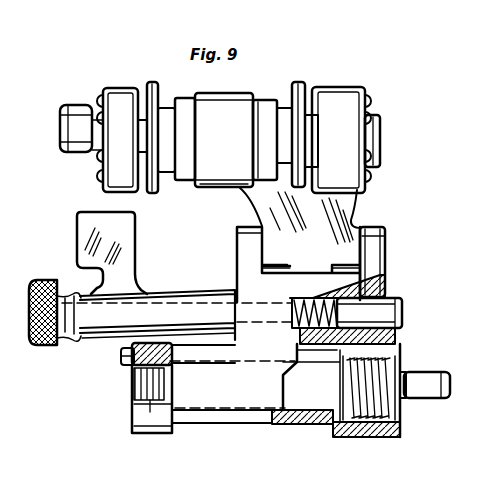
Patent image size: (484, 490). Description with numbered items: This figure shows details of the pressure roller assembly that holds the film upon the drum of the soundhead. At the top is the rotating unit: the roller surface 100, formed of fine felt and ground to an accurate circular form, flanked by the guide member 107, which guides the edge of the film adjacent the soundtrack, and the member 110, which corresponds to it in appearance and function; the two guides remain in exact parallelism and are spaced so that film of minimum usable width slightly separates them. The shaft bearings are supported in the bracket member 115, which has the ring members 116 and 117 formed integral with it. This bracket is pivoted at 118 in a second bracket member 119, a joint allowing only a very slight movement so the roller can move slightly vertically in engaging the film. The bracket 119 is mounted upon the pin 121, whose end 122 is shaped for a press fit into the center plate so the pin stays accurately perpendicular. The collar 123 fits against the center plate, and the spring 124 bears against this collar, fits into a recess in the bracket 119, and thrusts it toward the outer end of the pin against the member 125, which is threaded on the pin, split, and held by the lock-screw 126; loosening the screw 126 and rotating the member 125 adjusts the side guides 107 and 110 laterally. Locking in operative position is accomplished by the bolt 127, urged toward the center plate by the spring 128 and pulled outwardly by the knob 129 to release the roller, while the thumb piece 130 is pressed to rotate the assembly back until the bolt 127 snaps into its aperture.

The roller surface 100 is at (250, 93).
The guide member 107 is at (172, 78).
The member 110 is at (300, 83).
The bracket member 115 is at (354, 219).
The ring member 116 is at (328, 88).
The ring member 117 is at (136, 86).
The pivot 118 is at (378, 243).
The second bracket member 119 is at (376, 290).
The pin 121 is at (312, 410).
The end 122 is at (437, 401).
The collar 123 is at (402, 367).
The spring 124 is at (373, 428).
The member 125 is at (159, 433).
The lock-screw 126 is at (122, 360).
The bolt 127 is at (394, 316).
The spring 128 is at (383, 293).
The knob 129 is at (46, 346).
The thumb piece 130 is at (77, 240).